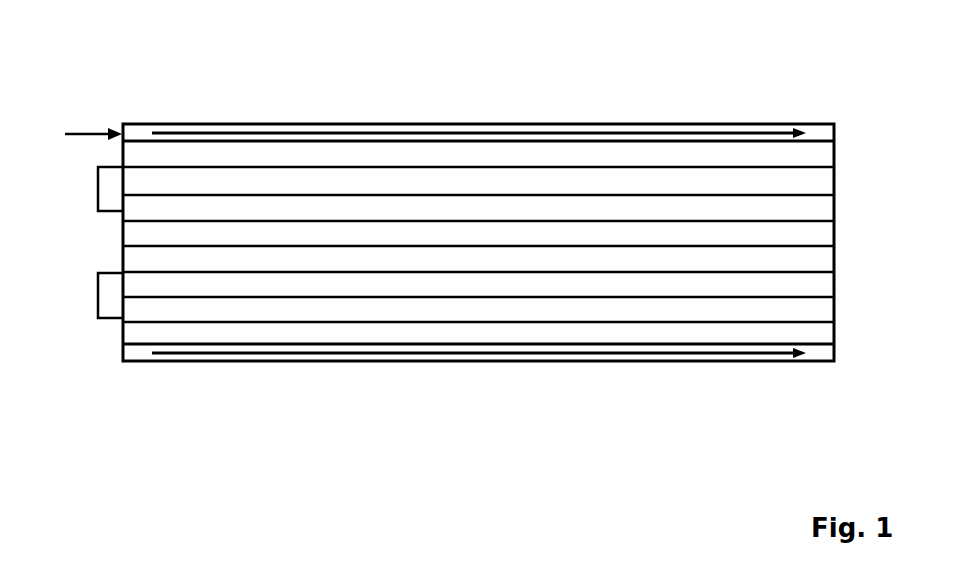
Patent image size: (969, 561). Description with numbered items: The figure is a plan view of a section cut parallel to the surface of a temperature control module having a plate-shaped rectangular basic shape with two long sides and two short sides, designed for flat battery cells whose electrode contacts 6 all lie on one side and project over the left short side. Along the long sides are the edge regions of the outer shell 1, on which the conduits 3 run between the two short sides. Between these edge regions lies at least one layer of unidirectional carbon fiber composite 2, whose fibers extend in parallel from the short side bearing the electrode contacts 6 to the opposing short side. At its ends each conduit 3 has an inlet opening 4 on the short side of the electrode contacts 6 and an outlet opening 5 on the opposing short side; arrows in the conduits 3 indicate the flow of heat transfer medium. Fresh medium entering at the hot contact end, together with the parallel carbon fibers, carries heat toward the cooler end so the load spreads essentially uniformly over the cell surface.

The outer shell 1 is at (565, 122).
The unidirectional carbon fiber composite 2 is at (770, 261).
The conduit 3 is at (177, 141).
The inlet opening 4 is at (78, 127).
The outlet opening 5 is at (815, 133).
The electrode contact 6 is at (95, 217).